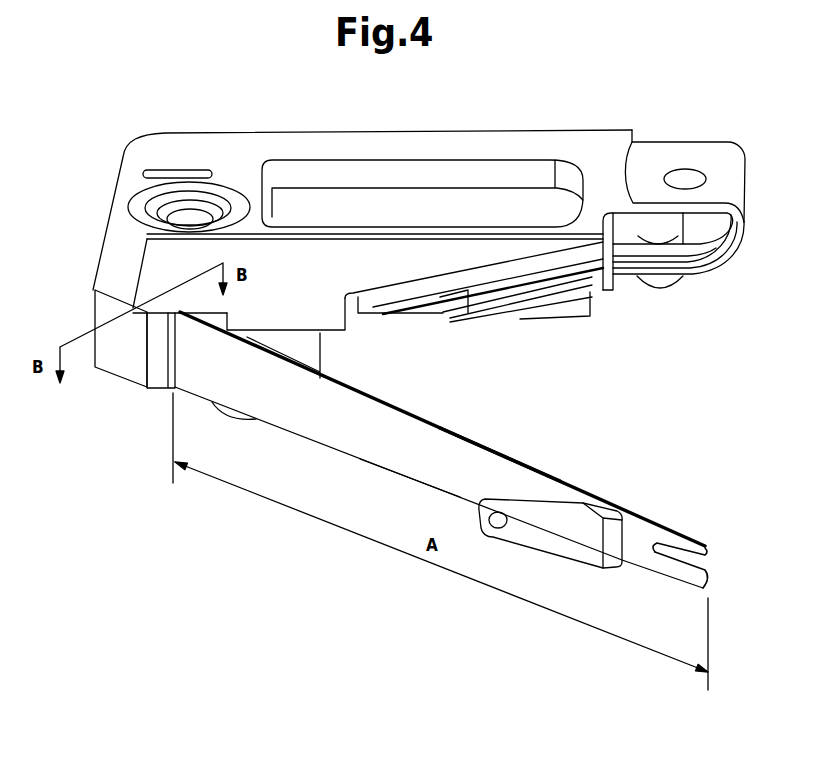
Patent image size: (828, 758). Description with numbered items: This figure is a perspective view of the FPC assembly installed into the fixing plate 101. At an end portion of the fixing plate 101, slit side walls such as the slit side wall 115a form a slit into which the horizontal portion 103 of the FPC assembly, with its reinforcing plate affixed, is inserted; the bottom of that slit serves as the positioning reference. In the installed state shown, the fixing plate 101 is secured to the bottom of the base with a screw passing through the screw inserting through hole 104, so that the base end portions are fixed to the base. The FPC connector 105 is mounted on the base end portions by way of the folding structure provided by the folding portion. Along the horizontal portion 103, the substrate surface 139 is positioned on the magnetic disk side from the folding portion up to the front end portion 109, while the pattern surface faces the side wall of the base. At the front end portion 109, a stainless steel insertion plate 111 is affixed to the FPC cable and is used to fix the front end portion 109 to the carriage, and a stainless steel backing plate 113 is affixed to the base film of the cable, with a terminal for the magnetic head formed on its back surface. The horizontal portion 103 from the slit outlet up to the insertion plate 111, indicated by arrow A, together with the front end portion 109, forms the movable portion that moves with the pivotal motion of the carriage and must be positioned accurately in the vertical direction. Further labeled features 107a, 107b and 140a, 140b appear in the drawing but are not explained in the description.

The fixing plate 101 is at (478, 128).
The horizontal portion 103 is at (463, 452).
The screw inserting through hole 104 is at (147, 200).
The FPC connector 105 is at (588, 296).
The flexure layer 107a is at (400, 313).
The flexure layer 107b is at (452, 315).
The front end portion 109 is at (702, 530).
The insertion plate 111 is at (683, 532).
The backing plate 113 is at (537, 538).
The slit side wall 115a is at (121, 367).
The substrate surface 139 is at (330, 435).
The lower rail 140a is at (405, 478).
The upper rail 140b is at (500, 450).